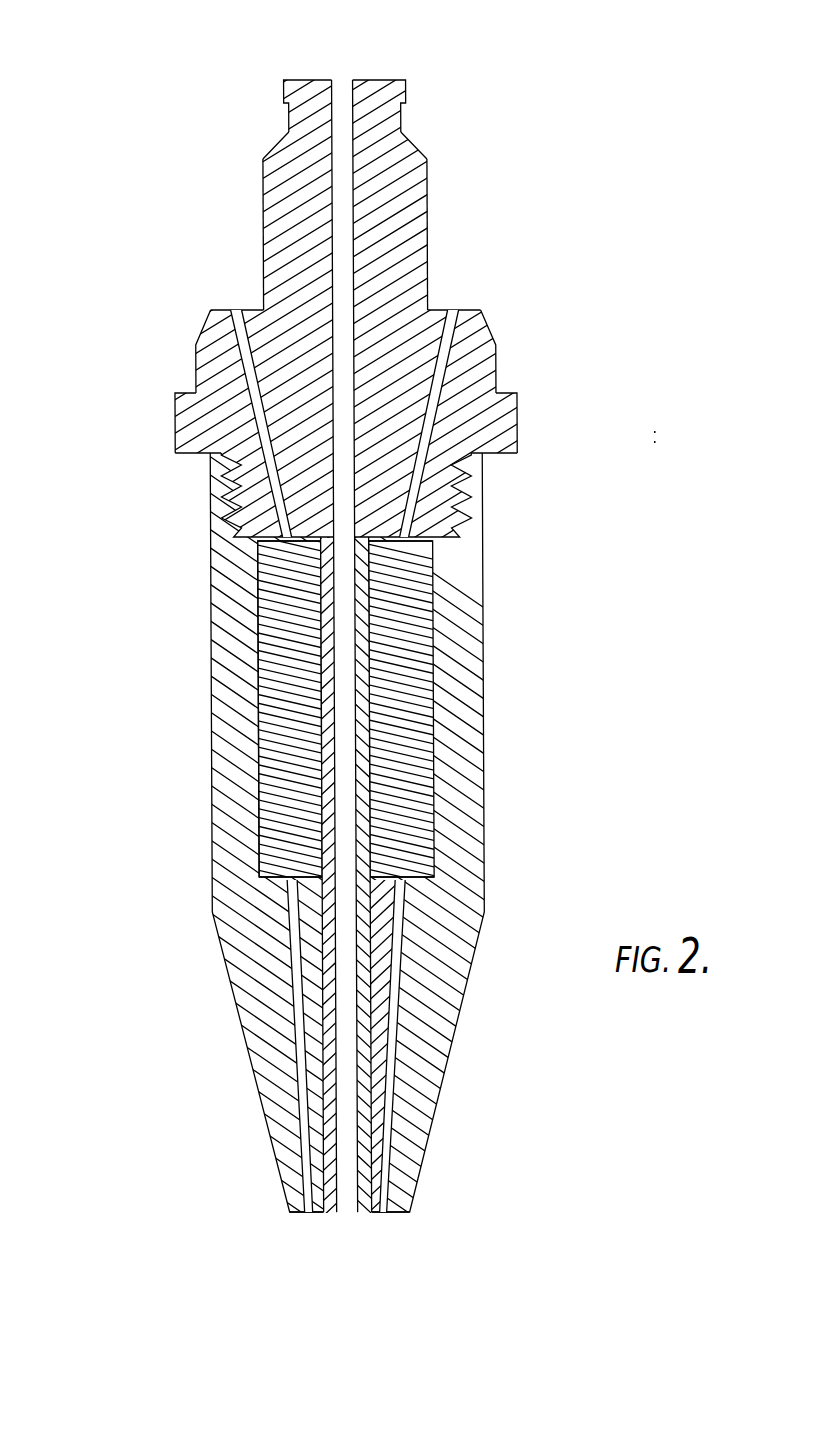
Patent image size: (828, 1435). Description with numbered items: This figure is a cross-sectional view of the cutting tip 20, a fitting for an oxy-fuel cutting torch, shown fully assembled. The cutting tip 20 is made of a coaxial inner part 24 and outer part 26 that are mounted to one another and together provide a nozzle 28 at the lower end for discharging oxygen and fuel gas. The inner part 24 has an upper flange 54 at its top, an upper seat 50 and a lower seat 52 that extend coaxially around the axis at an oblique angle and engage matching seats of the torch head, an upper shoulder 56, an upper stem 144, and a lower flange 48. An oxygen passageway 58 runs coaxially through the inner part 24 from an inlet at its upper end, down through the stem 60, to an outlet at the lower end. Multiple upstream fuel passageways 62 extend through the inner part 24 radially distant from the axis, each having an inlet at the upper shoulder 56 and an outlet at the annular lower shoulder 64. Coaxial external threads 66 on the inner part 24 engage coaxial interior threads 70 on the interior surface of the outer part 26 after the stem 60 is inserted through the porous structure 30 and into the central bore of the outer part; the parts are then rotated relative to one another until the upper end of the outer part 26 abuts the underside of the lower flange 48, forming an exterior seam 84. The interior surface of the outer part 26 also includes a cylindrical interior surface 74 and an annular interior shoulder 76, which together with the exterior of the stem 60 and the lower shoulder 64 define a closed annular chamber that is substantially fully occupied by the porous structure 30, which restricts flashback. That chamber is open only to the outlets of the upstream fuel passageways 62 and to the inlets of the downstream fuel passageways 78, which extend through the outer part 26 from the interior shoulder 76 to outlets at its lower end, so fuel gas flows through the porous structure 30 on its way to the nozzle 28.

The cutting tip 20 is at (200, 72).
The inner part 24 is at (258, 180).
The outer part 26 is at (205, 858).
The nozzle 28 is at (323, 1214).
The porous structure 30 is at (260, 695).
The lower flange 48 is at (518, 403).
The upper seat 50 is at (418, 148).
The lower seat 52 is at (492, 325).
The upper flange 54 is at (410, 92).
The upper shoulder 56 is at (468, 308).
The oxygen passageway 58 is at (343, 88).
The stem 60 is at (364, 1214).
The upstream fuel passageways 62 is at (236, 312).
The lower shoulder 64 is at (270, 542).
The external threads 66 is at (237, 485).
The interior threads 70 is at (463, 518).
The cylindrical interior surface 74 is at (267, 767).
The interior shoulder 76 is at (420, 873).
The downstream fuel passageways 78 is at (312, 1214).
The exterior seam 84 is at (483, 455).
The upper stem 144 is at (263, 272).